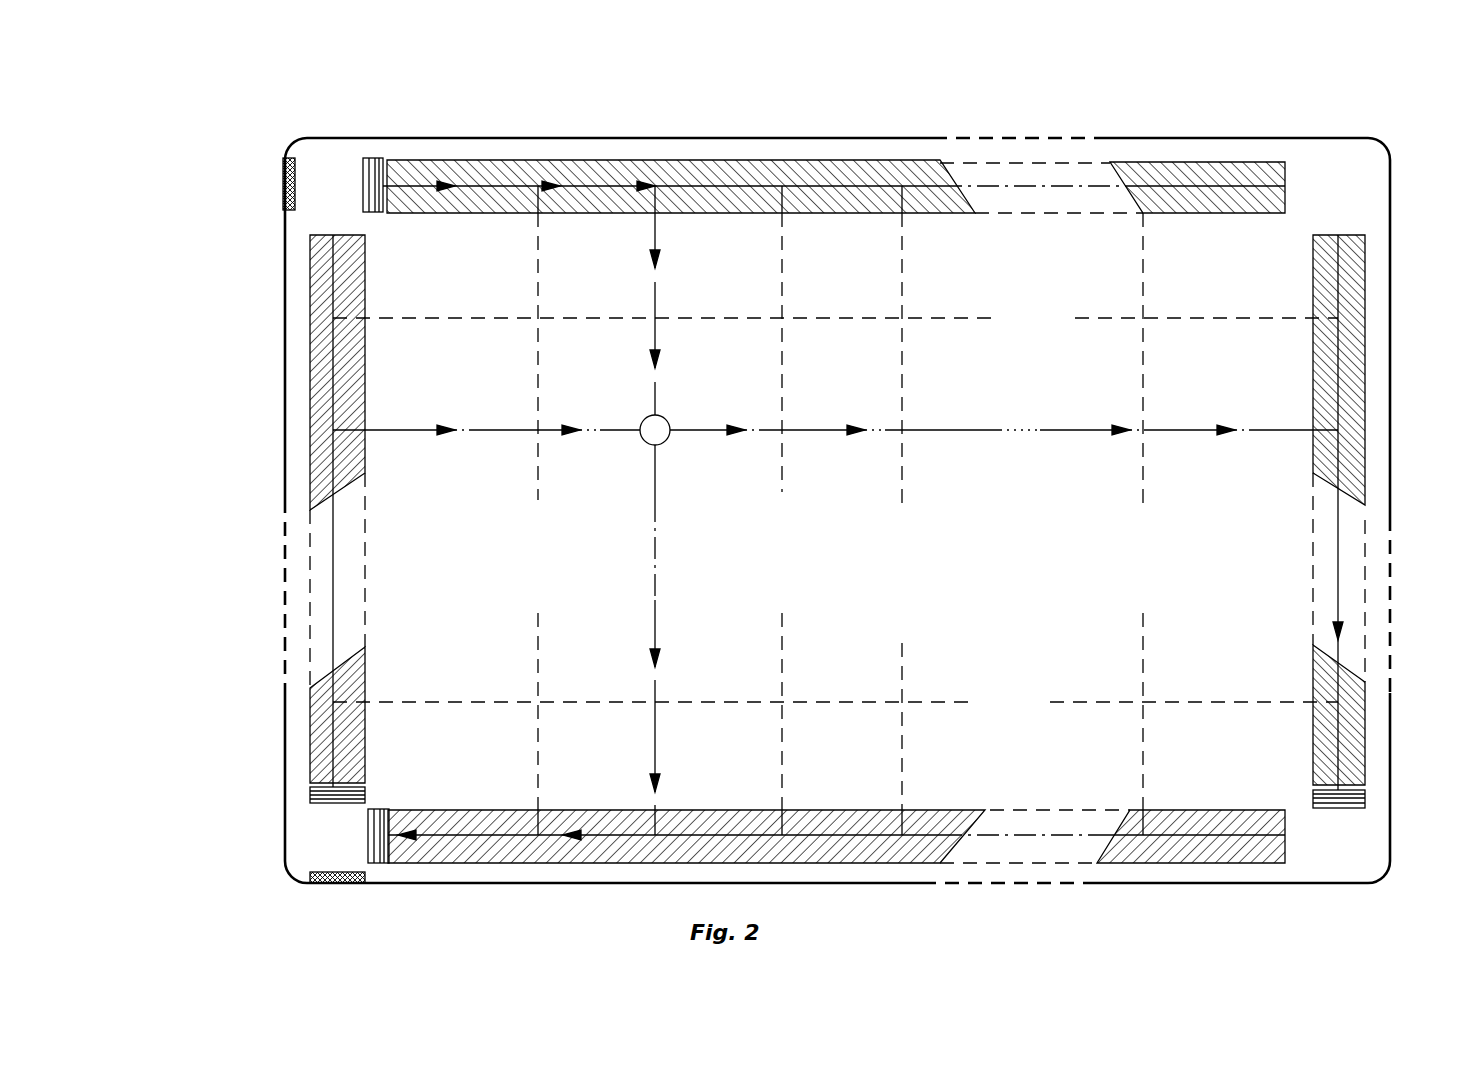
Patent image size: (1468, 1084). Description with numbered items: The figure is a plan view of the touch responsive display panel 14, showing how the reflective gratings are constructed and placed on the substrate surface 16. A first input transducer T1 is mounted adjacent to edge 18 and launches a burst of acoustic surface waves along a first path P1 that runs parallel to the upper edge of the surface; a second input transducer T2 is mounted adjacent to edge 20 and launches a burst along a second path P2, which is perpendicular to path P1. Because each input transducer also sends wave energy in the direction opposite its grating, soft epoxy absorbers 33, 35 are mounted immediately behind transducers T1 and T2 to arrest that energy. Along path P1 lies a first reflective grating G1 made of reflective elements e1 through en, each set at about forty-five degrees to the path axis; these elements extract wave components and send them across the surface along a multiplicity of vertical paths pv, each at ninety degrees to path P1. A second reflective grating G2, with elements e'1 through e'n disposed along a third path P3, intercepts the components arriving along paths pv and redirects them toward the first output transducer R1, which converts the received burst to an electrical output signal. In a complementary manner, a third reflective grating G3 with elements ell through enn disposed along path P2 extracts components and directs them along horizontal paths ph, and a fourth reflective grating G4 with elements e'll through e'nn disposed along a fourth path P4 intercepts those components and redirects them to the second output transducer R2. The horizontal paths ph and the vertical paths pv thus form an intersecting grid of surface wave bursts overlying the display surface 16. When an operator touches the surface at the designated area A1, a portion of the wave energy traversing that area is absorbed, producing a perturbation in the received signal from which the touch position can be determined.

The display panel frame 14 is at (1392, 188).
The substrate surface 16 is at (1050, 270).
The edge 18 is at (286, 326).
The edge 20 is at (508, 884).
The absorber 33 is at (285, 185).
The absorber 35 is at (310, 878).
The input transducer T1 is at (378, 158).
The input transducer T2 is at (310, 793).
The output transducer R1 is at (378, 864).
The output transducer R2 is at (1365, 800).
The reflective element e1 is at (408, 170).
The first reflective grating G1 is at (515, 175).
The first path P1 is at (940, 186).
The reflective element en is at (1258, 162).
The reflective element enn is at (345, 240).
The reflective element e'nn is at (1300, 512).
The second path P2 is at (338, 366).
The fourth path P4 is at (1328, 380).
The third reflective grating G3 is at (355, 450).
The fourth reflective grating G4 is at (1325, 450).
The touched area A1 is at (668, 442).
The paths ph is at (515, 318).
The paths pv is at (782, 292).
The reflective element ell is at (355, 735).
The reflective element e'1 is at (836, 805).
The second reflective grating G2 is at (720, 822).
The third path P3 is at (852, 832).
The reflective element e'n is at (1191, 803).
The reflective element e'll is at (1310, 715).